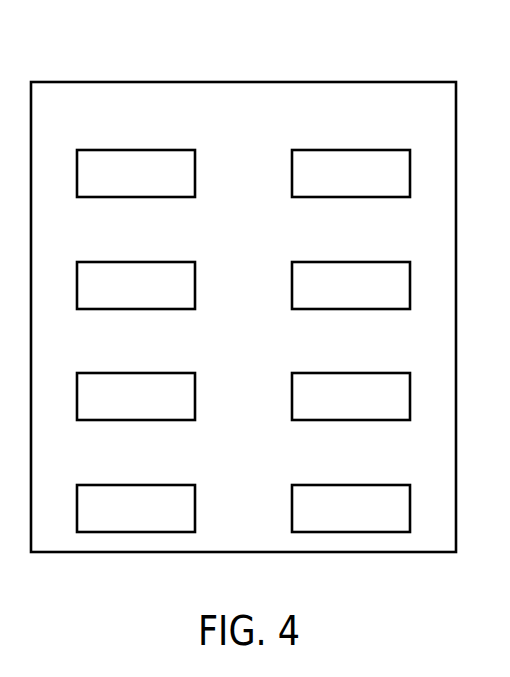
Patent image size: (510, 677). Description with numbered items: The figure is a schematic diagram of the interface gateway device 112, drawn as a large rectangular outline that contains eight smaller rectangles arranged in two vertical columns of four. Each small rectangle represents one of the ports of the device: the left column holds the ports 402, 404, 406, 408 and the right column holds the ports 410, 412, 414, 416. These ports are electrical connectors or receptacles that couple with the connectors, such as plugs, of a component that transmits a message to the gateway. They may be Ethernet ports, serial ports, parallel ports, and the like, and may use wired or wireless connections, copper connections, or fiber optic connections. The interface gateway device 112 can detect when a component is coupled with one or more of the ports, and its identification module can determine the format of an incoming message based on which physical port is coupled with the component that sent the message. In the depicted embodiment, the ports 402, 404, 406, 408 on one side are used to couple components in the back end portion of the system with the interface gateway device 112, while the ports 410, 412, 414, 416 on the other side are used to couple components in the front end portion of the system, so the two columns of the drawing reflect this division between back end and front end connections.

The interface gateway device 112 is at (457, 82).
The port 402 is at (134, 150).
The port 404 is at (134, 262).
The port 406 is at (134, 373).
The port 408 is at (134, 485).
The port 410 is at (351, 150).
The port 412 is at (351, 262).
The port 414 is at (351, 373).
The port 416 is at (351, 485).